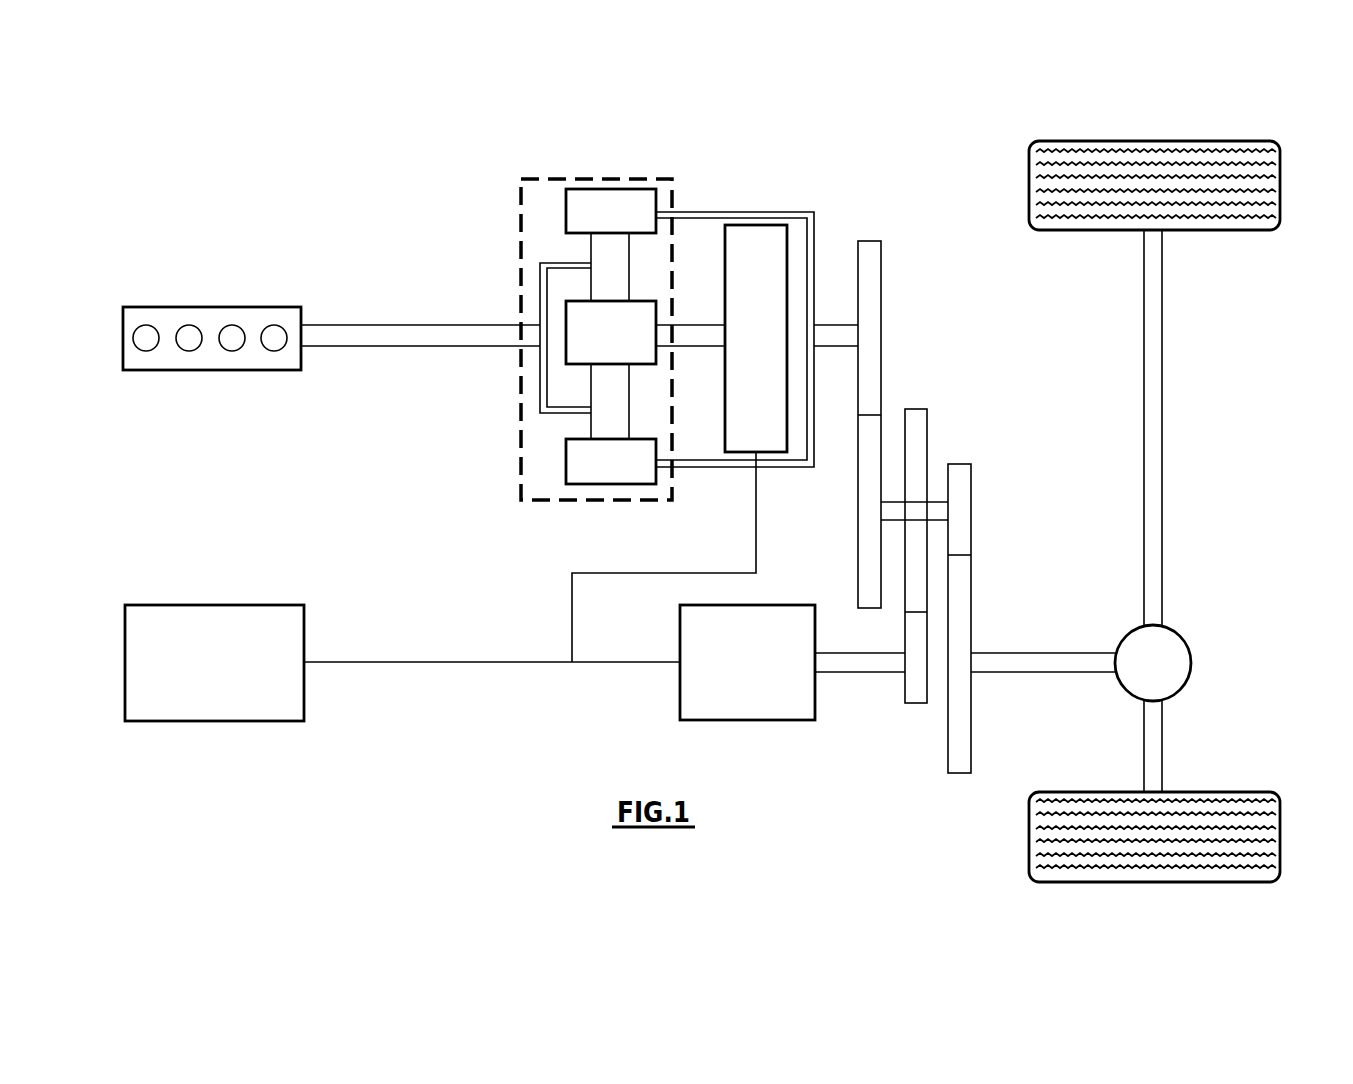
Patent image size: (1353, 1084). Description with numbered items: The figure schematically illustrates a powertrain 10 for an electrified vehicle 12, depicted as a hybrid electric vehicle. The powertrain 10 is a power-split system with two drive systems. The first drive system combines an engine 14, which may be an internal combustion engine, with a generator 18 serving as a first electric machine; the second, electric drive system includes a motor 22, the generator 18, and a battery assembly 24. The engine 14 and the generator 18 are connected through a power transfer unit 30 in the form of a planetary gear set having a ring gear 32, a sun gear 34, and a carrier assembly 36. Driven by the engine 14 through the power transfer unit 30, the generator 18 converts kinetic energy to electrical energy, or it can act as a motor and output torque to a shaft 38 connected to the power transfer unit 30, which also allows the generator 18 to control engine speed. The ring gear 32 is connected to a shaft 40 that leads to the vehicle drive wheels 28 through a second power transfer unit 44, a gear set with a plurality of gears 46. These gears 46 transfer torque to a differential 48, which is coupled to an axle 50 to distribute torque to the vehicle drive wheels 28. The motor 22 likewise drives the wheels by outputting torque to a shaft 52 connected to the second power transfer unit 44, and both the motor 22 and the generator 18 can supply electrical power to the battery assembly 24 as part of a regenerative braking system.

The powertrain 10 is at (358, 200).
The electrified vehicle 12 is at (786, 130).
The engine 14 is at (142, 306).
The generator 18 is at (740, 225).
The motor 22 is at (817, 705).
The battery assembly 24 is at (145, 605).
The vehicle drive wheels 28 is at (1280, 838).
The power transfer unit 30 is at (521, 455).
The ring gear 32 is at (566, 211).
The sun gear 34 is at (566, 308).
The carrier assembly 36 is at (540, 397).
The shaft 38 is at (686, 325).
The shaft 40 is at (840, 325).
The second power transfer unit 44 is at (953, 372).
The gears 46 is at (881, 377).
The differential 48 is at (1188, 685).
The axle 50 is at (1178, 412).
The shaft 52 is at (870, 672).